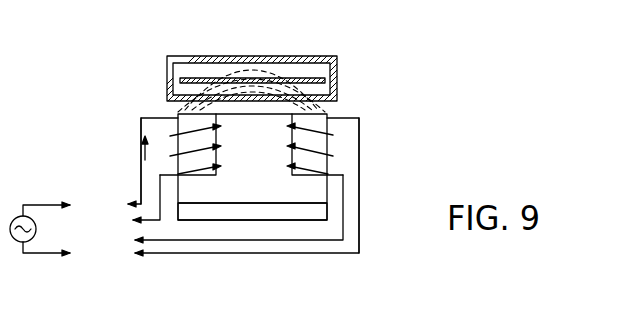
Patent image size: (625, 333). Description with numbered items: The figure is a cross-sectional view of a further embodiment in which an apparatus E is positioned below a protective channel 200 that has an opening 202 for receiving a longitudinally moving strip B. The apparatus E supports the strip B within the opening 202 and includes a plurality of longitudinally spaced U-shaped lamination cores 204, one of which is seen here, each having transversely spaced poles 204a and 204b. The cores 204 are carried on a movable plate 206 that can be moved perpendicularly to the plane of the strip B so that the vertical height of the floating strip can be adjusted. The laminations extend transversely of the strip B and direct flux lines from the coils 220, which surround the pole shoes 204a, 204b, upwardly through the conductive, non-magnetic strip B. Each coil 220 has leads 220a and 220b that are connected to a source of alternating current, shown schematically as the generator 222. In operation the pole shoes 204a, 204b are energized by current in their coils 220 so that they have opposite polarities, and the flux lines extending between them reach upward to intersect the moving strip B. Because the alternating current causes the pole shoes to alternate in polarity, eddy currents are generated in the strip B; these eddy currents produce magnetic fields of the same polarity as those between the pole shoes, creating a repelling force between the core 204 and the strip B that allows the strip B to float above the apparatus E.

The strip B is at (214, 65).
The protective channel 200 is at (245, 56).
The opening 202 is at (307, 55).
The U-shaped lamination core 204 is at (257, 185).
The pole 204a is at (178, 123).
The pole 204b is at (326, 113).
The movable plate 206 is at (313, 213).
The coil 220 is at (207, 150).
The lead 220a is at (147, 271).
The lead 220b is at (127, 241).
The generator 222 is at (13, 217).
The apparatus E is at (392, 175).